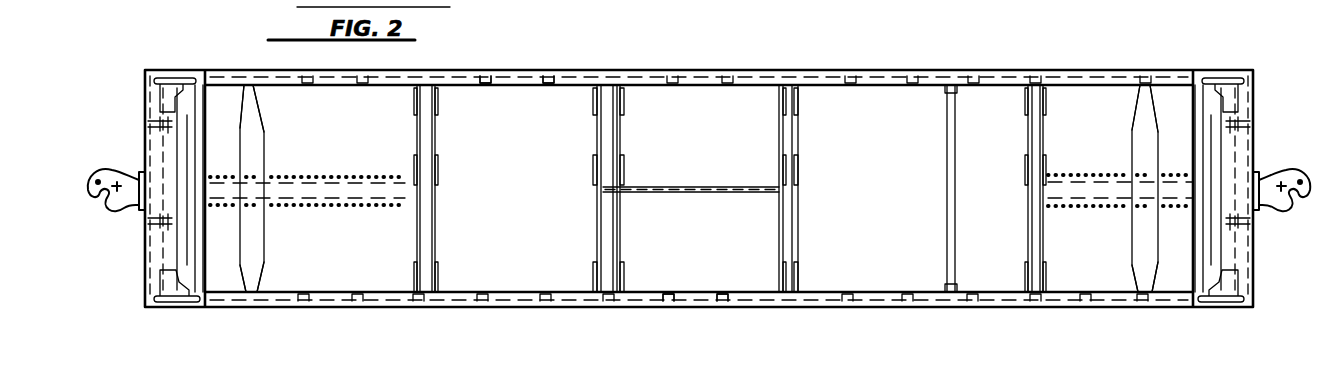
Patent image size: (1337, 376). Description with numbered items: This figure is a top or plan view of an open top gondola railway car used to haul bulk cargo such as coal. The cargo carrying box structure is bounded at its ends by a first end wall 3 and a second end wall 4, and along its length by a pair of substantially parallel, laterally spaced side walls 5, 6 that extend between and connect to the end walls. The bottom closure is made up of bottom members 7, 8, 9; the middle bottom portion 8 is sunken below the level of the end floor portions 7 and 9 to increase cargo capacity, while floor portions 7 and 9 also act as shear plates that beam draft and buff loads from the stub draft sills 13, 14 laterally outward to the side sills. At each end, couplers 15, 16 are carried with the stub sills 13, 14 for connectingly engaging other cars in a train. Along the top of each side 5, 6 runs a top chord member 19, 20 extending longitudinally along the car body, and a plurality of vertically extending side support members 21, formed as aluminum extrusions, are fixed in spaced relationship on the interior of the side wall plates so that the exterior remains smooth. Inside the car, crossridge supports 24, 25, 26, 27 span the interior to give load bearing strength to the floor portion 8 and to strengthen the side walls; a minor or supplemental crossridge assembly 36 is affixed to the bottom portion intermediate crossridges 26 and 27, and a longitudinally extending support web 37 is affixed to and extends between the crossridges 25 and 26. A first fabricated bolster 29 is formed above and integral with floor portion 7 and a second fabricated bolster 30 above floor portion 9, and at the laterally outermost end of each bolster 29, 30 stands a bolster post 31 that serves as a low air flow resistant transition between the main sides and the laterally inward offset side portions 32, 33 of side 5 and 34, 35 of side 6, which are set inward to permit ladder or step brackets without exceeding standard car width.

The first end wall 3 is at (150, 123).
The second end wall 4 is at (1235, 130).
The side wall 5 is at (687, 72).
The side wall 6 is at (785, 308).
The bottom member 7 is at (387, 277).
The bottom member 8 is at (570, 277).
The bottom member 9 is at (1082, 277).
The stub draft sill 13 is at (372, 198).
The stub draft sill 14 is at (1187, 198).
The coupler 15 is at (124, 216).
The coupler 16 is at (1300, 167).
The top chord member 19 is at (865, 304).
The top chord member 20 is at (863, 78).
The side support member 21 is at (548, 75).
The crossridge support 24 is at (433, 167).
The crossridge support 25 is at (600, 148).
The crossridge support 26 is at (800, 142).
The crossridge support 27 is at (1040, 147).
The first fabricated bolster 29 is at (253, 153).
The second fabricated bolster 30 is at (1140, 136).
The bolster post 31 is at (245, 80).
The offset side portion 32 is at (190, 76).
The offset side portion 33 is at (1168, 80).
The offset side portion 34 is at (170, 306).
The offset side portion 35 is at (1218, 306).
The supplemental crossridge assembly 36 is at (960, 148).
The support web 37 is at (713, 184).